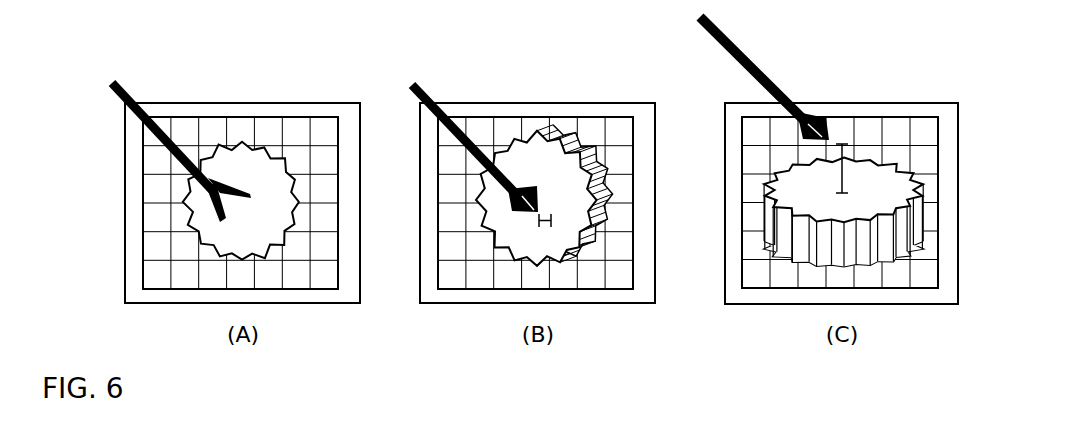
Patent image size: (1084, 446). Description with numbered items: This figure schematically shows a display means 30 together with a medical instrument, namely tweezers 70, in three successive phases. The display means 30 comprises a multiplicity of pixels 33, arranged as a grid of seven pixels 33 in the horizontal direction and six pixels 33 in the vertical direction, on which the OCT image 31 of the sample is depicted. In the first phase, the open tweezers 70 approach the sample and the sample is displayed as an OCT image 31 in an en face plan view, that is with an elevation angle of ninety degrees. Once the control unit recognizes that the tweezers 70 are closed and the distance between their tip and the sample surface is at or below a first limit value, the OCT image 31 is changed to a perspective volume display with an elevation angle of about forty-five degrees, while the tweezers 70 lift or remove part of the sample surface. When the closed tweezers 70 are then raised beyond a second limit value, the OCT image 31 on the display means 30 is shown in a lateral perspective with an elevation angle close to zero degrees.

The display means 30 is at (125, 243).
The OCT image 31 is at (245, 175).
The pixels 33 is at (157, 186).
The tweezers 70 is at (122, 100).